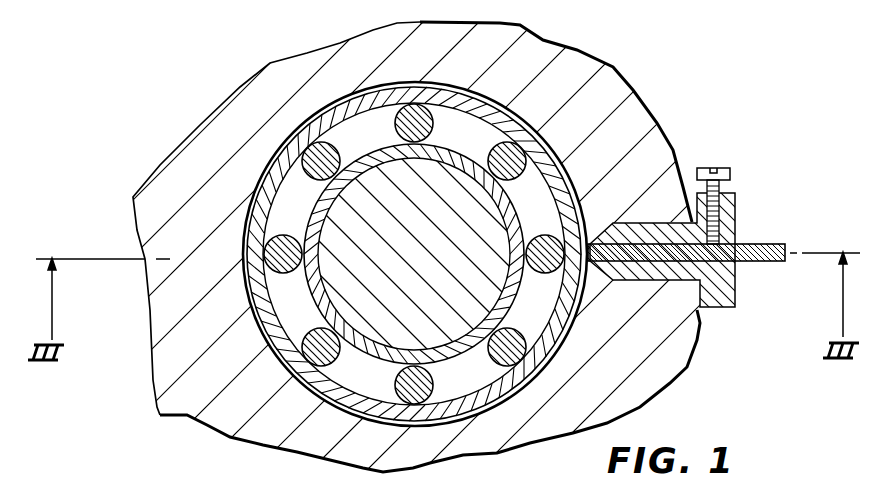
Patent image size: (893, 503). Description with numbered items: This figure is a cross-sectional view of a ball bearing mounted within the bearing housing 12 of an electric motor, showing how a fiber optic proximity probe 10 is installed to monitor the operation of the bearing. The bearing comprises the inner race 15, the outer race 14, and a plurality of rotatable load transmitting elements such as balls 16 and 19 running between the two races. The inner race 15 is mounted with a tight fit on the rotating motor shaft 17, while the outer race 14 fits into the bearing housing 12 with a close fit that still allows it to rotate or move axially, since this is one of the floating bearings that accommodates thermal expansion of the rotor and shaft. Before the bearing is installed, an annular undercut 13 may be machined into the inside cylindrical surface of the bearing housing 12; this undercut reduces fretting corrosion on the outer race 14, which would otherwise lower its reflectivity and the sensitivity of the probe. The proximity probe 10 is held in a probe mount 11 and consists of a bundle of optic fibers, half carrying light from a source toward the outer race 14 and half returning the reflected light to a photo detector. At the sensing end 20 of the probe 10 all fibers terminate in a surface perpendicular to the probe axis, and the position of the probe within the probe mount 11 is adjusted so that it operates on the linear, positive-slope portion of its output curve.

The fiber optic proximity probe 10 is at (748, 243).
The probe mount 11 is at (737, 277).
The bearing housing 12 is at (655, 185).
The annular undercut 13 is at (562, 171).
The outer race 14 is at (553, 196).
The inner race 15 is at (460, 358).
The ball 16 is at (543, 275).
The motor shaft 17 is at (419, 241).
The ball 19 is at (297, 275).
The sensing end 20 is at (584, 277).